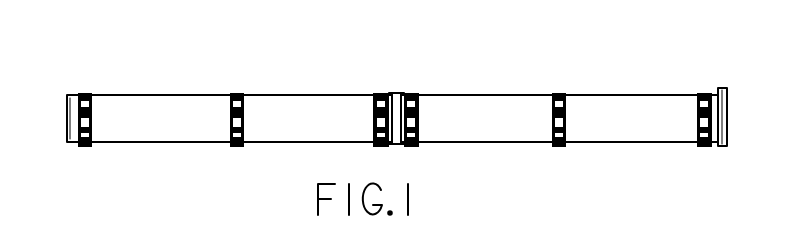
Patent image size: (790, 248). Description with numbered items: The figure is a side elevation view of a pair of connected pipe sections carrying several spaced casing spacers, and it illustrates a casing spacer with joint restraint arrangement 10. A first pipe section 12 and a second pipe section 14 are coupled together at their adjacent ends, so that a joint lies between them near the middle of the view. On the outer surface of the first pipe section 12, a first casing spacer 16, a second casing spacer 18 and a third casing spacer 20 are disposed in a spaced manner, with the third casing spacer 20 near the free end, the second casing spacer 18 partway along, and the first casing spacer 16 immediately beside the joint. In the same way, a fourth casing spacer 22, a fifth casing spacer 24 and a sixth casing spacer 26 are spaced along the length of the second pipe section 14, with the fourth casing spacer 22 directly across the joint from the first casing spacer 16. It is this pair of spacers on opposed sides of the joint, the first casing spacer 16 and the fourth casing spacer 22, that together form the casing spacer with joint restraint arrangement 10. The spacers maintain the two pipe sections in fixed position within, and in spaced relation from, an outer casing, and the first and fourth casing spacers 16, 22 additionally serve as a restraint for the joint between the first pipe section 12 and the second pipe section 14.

The casing spacer with joint restraint arrangement 10 is at (376, 79).
The first pipe section 12 is at (158, 104).
The second pipe section 14 is at (599, 107).
The first casing spacer 16 is at (375, 105).
The second casing spacer 18 is at (233, 100).
The third casing spacer 20 is at (82, 95).
The fourth casing spacer 22 is at (420, 103).
The fifth casing spacer 24 is at (553, 105).
The sixth casing spacer 26 is at (700, 103).